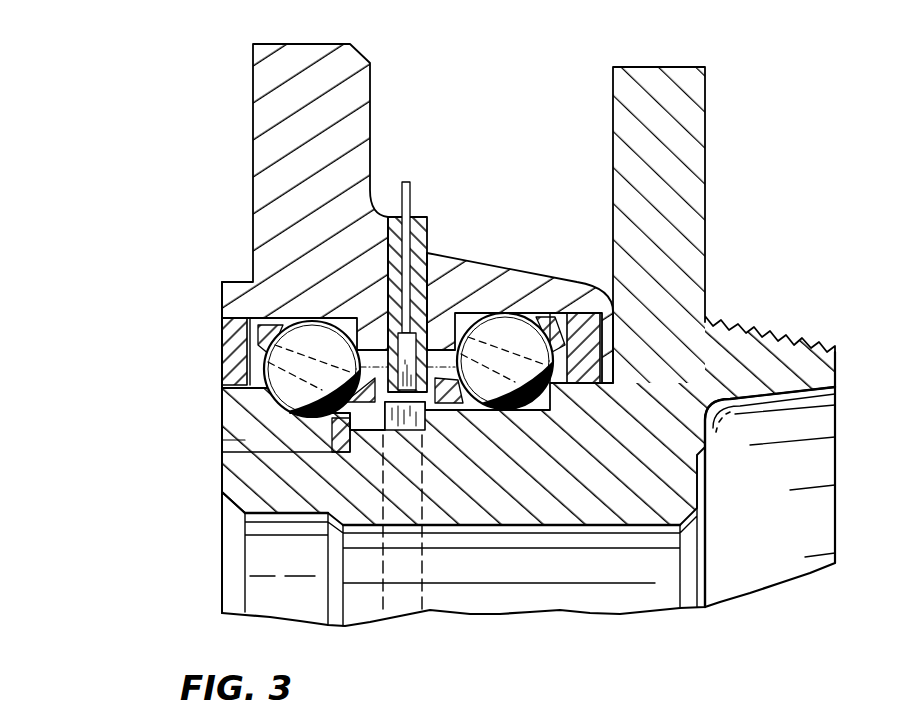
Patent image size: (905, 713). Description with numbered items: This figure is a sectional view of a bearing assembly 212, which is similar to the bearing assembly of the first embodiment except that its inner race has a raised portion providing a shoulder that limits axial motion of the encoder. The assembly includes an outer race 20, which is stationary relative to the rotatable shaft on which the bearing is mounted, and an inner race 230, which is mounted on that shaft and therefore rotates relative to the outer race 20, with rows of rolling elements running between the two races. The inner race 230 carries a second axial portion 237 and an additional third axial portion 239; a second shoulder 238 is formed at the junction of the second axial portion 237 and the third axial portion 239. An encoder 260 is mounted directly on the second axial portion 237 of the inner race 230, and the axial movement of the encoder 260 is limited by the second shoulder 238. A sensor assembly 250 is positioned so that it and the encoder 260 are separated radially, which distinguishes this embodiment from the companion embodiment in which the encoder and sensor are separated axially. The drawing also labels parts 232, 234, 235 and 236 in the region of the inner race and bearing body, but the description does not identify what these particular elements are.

The outer race 20 is at (304, 50).
The bearing assembly 212 is at (546, 20).
The inner race 230 is at (560, 529).
The outer race ring 232 is at (233, 398).
The side wall 234 is at (233, 488).
The retainer 235 is at (251, 446).
The clip 236 is at (347, 442).
The second axial portion 237 is at (362, 430).
The second shoulder 238 is at (421, 418).
The third axial portion 239 is at (458, 403).
The sensor assembly 250 is at (428, 222).
The encoder 260 is at (427, 567).